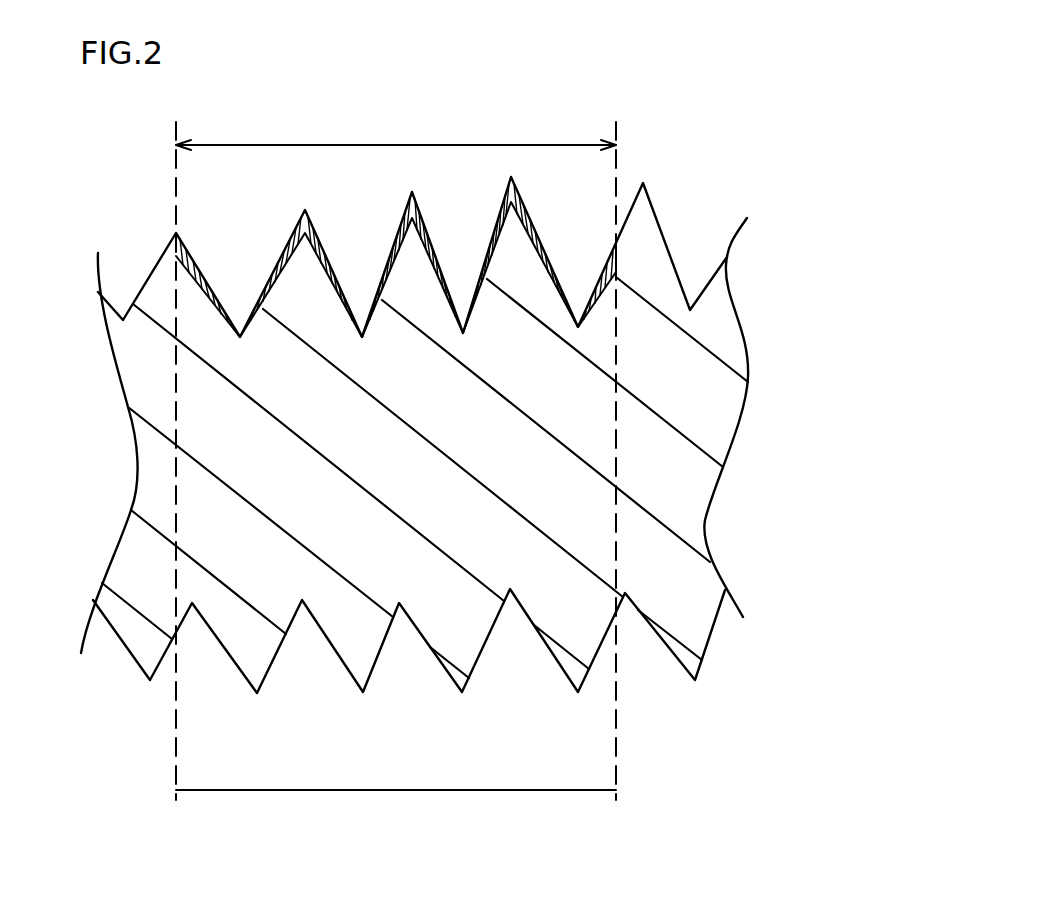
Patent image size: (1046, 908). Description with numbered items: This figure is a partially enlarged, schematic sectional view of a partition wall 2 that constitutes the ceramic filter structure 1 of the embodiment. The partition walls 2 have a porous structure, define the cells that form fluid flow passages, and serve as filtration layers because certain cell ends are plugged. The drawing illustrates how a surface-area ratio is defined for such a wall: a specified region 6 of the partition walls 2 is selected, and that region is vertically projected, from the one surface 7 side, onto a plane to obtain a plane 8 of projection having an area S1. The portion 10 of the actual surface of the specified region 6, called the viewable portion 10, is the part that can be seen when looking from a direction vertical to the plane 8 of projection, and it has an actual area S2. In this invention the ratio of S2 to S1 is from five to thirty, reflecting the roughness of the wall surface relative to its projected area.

The ceramic filter structure 1 is at (762, 165).
The partition wall 2 is at (710, 393).
The specified region 6 is at (396, 455).
The one surface 7 is at (676, 186).
The plane of projection 8 is at (513, 789).
The viewable portion 10 is at (203, 263).